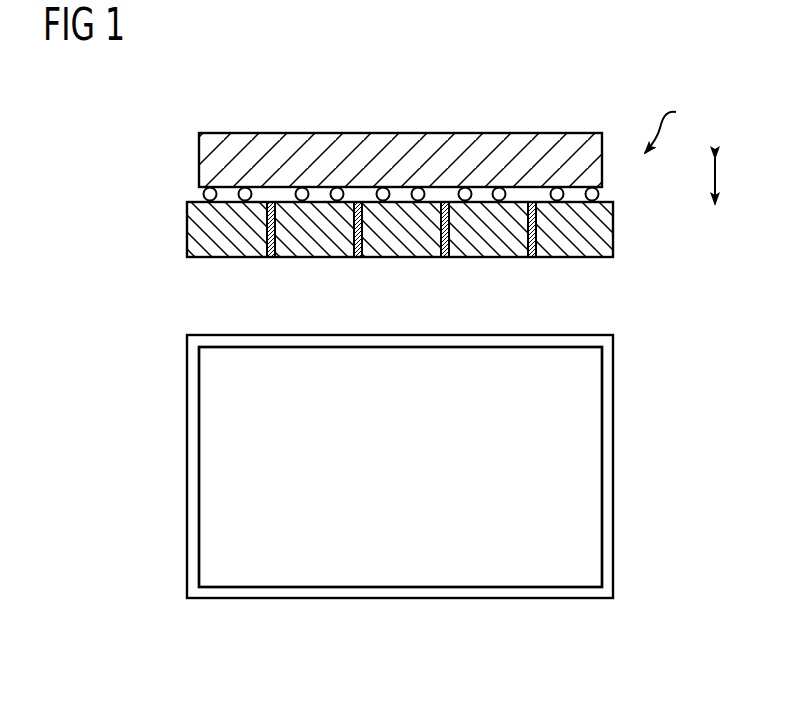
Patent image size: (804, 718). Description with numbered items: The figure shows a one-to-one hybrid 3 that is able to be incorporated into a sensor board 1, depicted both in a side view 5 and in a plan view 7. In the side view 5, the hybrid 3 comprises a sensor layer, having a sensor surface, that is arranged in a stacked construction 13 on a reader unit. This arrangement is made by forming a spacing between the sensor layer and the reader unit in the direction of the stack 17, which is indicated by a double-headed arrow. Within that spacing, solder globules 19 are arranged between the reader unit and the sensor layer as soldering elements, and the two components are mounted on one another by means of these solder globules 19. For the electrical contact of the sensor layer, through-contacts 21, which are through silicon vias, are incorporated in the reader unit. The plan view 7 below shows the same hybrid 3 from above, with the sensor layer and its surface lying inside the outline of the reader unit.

The sensor board 1 is at (138, 147).
The hybrid 3 is at (236, 115).
The side view 5 is at (155, 241).
The plan view 7 is at (155, 471).
The stacked construction 13 is at (673, 125).
The direction of the stack 17 is at (716, 178).
The solder globules 19 is at (206, 194).
The through-contacts 21 is at (445, 248).